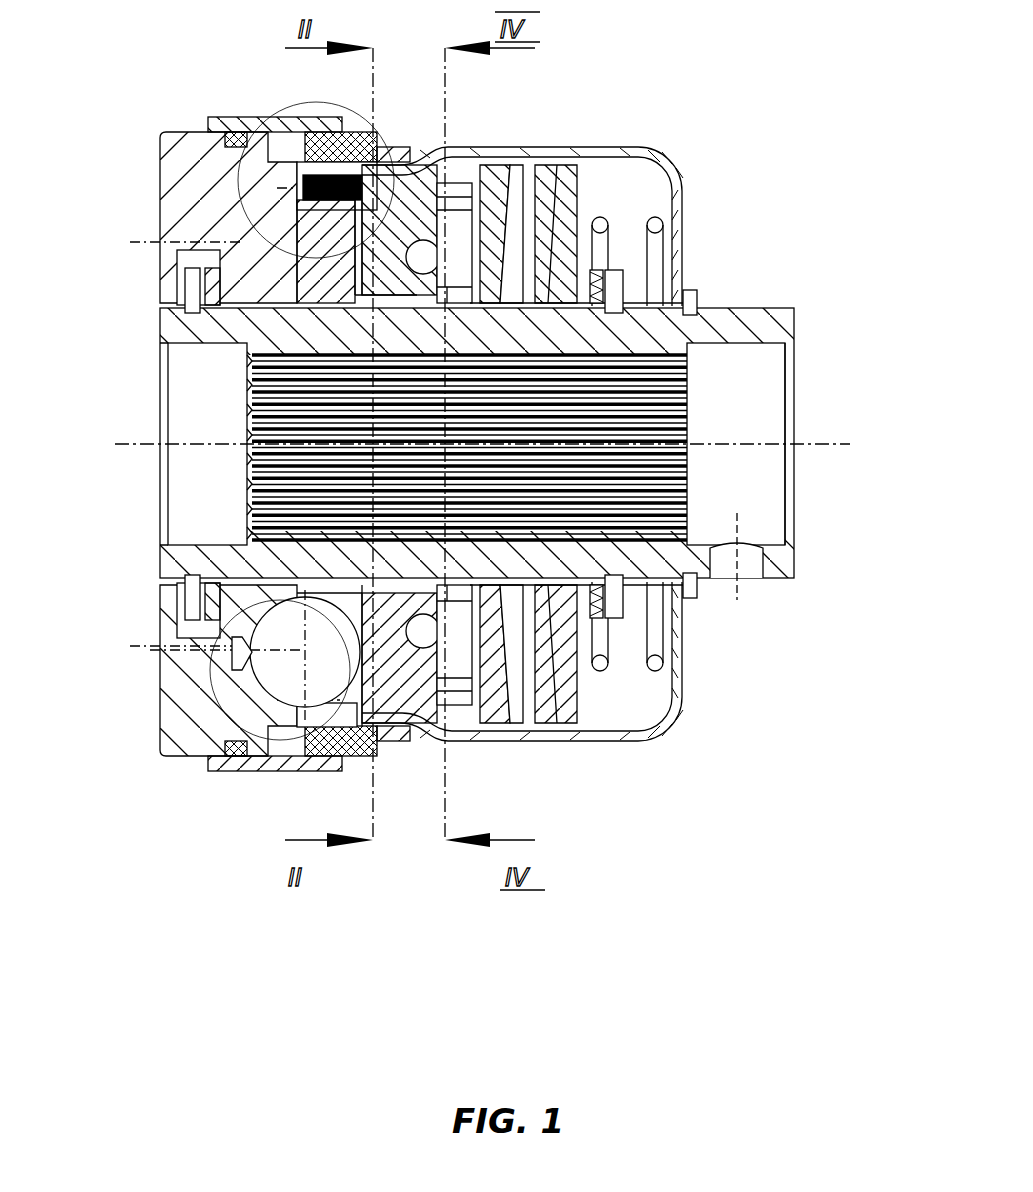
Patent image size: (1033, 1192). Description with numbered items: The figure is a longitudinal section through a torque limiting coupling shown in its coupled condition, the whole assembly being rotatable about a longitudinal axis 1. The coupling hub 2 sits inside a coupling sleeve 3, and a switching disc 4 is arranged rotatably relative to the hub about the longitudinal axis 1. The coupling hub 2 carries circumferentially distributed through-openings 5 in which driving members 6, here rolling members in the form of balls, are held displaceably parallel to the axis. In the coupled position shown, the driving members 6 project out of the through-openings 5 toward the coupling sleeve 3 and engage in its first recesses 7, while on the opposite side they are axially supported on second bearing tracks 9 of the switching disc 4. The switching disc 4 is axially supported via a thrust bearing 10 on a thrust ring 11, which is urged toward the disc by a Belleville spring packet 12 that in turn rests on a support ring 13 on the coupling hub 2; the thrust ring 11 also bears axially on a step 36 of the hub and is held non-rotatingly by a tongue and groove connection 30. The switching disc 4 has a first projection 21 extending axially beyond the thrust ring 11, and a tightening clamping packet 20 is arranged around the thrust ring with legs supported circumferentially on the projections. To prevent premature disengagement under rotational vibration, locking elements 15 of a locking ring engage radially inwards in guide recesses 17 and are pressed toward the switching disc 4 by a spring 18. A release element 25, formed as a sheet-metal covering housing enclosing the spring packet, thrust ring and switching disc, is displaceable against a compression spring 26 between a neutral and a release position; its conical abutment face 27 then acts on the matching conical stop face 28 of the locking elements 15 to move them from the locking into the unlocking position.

The longitudinal axis 1 is at (817, 443).
The coupling hub 2 is at (193, 327).
The coupling sleeve 3 is at (187, 185).
The switching disc 4 is at (420, 190).
The through-openings 5 is at (345, 606).
The driving members 6 is at (243, 676).
The first recesses 7 is at (268, 674).
The second bearing tracks 9 is at (327, 703).
The thrust bearing 10 is at (462, 185).
The thrust ring 11 is at (510, 172).
The Belleville spring packet 12 is at (548, 153).
The support ring 13 is at (613, 283).
The locking element 15 is at (350, 160).
The guide recess 17 is at (337, 173).
The spring 18 is at (285, 122).
The tightening clamping packet 20 is at (445, 250).
The first projection 21 is at (478, 722).
The release element 25 is at (683, 190).
The compression spring 26 is at (655, 247).
The abutment face 27 is at (285, 760).
The stop face 28 is at (367, 760).
The tongue and groove connection 30 is at (247, 345).
The step 36 is at (415, 722).